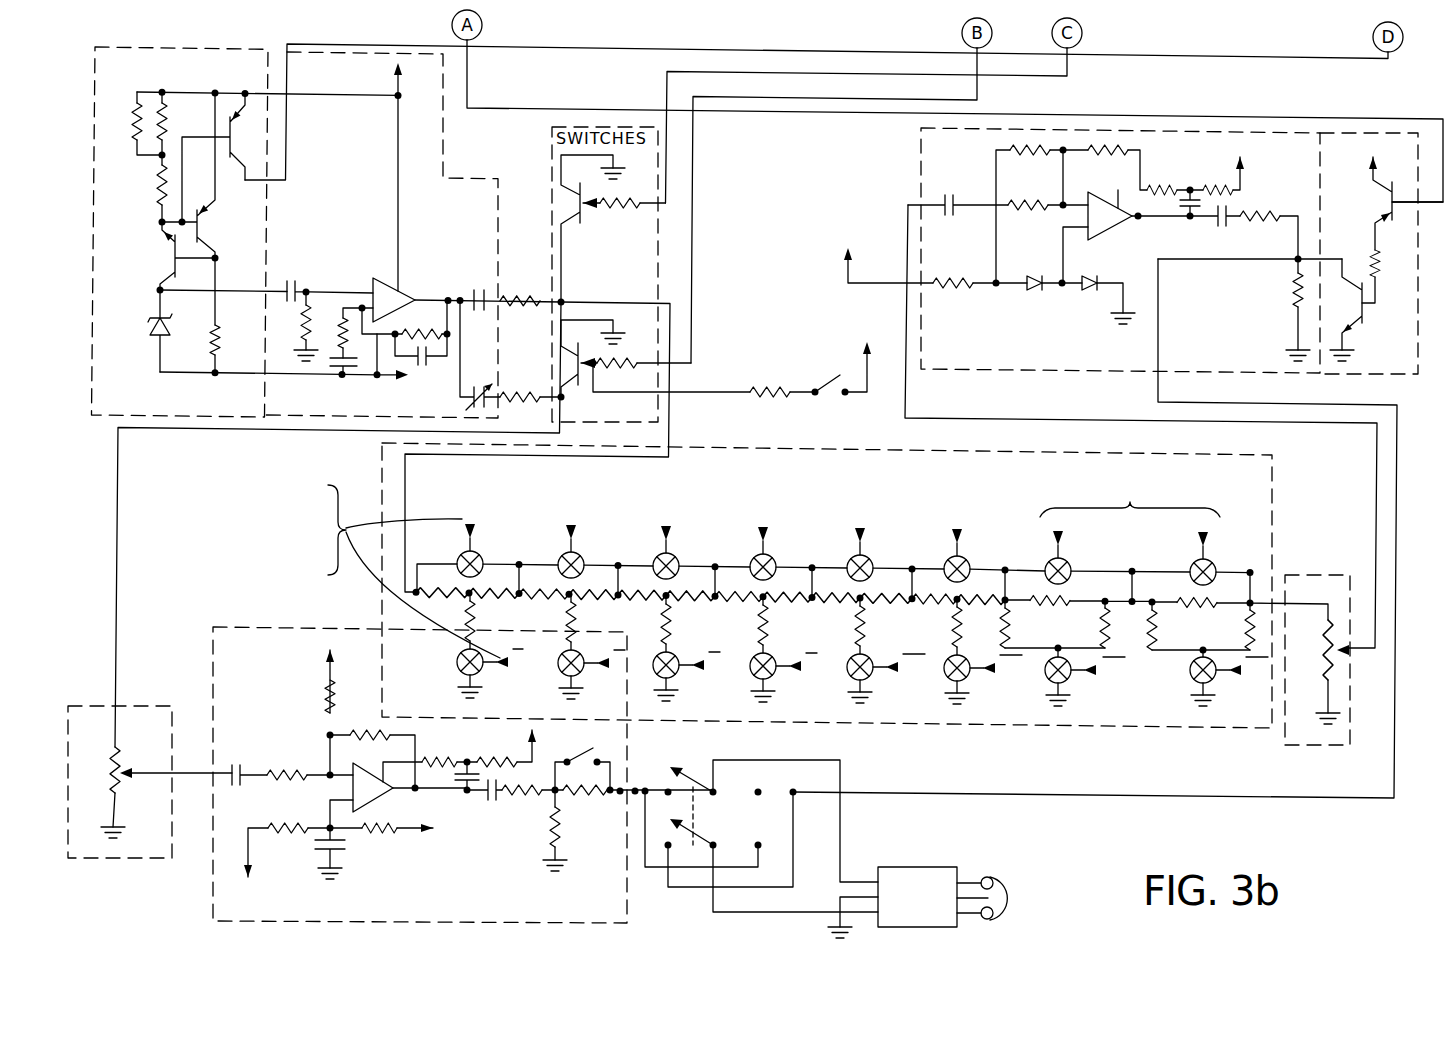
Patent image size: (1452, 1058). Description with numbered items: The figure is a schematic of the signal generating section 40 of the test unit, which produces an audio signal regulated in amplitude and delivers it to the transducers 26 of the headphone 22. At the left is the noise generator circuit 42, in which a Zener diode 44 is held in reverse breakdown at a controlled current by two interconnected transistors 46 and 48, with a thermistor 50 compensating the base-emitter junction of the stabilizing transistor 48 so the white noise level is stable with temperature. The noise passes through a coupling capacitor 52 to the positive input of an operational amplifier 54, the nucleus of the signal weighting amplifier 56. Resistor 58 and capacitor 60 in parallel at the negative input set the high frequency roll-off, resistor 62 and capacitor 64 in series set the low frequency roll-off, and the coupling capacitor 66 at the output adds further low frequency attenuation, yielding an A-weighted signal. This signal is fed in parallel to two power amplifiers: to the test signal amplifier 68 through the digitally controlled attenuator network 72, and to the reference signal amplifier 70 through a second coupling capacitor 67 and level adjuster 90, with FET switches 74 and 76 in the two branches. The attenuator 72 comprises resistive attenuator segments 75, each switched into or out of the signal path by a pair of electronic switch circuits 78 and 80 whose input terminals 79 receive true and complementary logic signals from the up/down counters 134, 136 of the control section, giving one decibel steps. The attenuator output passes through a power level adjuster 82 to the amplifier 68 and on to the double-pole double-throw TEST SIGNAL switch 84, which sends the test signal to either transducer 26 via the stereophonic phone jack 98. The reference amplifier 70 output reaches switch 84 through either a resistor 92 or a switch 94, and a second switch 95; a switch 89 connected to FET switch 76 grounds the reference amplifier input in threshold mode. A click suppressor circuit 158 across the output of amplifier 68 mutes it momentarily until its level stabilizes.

The headphone 22 is at (1008, 888).
The transducers 26 is at (984, 877).
The signal generating section 40 is at (1066, 828).
The noise generator circuit 42 is at (245, 77).
The Zener diode 44 is at (152, 333).
The transistor 46 is at (162, 260).
The stabilizing transistor 48 is at (201, 221).
The thermistor 50 is at (133, 125).
The coupling capacitor 52 is at (290, 280).
The operational amplifier 54 is at (394, 281).
The signal weighting amplifier 56 is at (376, 239).
The resistor 58 is at (418, 328).
The capacitor 60 is at (430, 363).
The resistor 62 is at (343, 332).
The capacitor 64 is at (330, 365).
The coupling capacitor 66 is at (478, 288).
The second coupling capacitor 67 is at (490, 386).
The test signal amplifier 68 is at (1070, 349).
The reference signal amplifier 70 is at (507, 916).
The digitally controlled attenuator network 72 is at (1145, 481).
The FET switch 74 is at (583, 212).
The resistive attenuator segments 75 is at (502, 622).
The FET switch 76 is at (585, 385).
The electronic switch circuit 78 is at (479, 554).
The input terminal 79 is at (476, 530).
The electronic switch circuit 80 is at (460, 671).
The power level adjuster 82 is at (1320, 575).
The TEST SIGNAL switch 84 is at (703, 833).
The manually operable switch 89 is at (836, 384).
The level adjuster 90 is at (128, 706).
The resistor 92 is at (590, 800).
The manually operable switch 94 is at (600, 749).
The second manually operable switch 95 is at (622, 786).
The stereophonic phone jack 98 is at (910, 867).
The up/down counter 134 is at (336, 571).
The up/down counter 136 is at (246, 541).
The click suppressor circuit 158 is at (1400, 378).